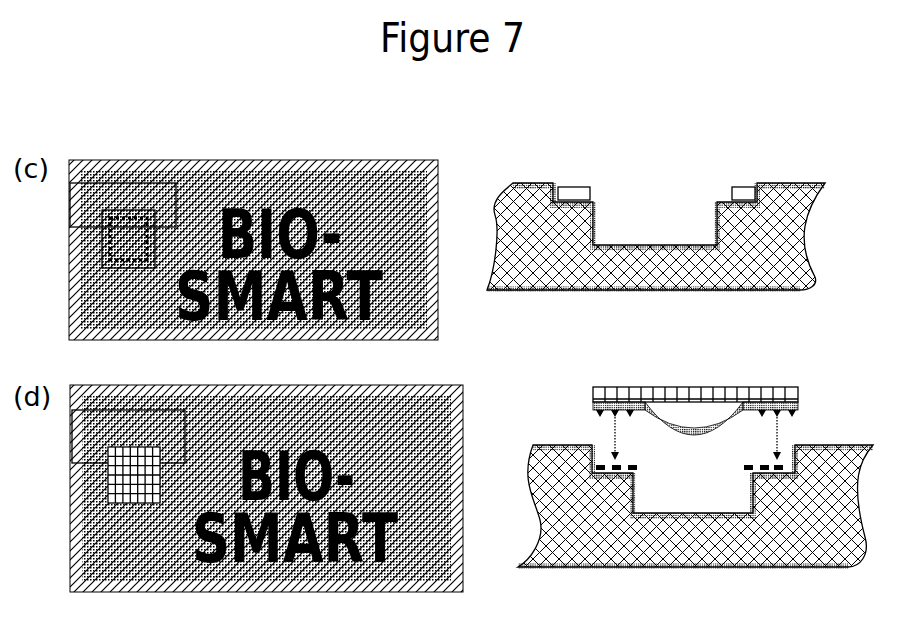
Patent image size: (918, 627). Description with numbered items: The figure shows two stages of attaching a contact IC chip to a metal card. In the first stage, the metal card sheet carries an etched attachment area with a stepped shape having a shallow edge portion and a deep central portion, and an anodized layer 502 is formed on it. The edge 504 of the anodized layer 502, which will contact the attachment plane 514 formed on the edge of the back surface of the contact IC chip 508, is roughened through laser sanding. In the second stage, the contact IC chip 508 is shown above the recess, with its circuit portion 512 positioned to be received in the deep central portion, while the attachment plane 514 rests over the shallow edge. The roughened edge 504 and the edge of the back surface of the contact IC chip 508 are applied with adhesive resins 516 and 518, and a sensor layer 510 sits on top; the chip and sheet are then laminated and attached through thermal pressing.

The anodized layer 502 is at (662, 228).
The roughened edge of the anodized layer 504 is at (126, 270).
The contact IC chip 508 is at (115, 488).
The sensor layer 510 is at (682, 388).
The circuit portion 512 is at (697, 412).
The attachment plane 514 is at (802, 412).
The adhesive resin 516 is at (593, 413).
The adhesive resin 518 is at (747, 467).